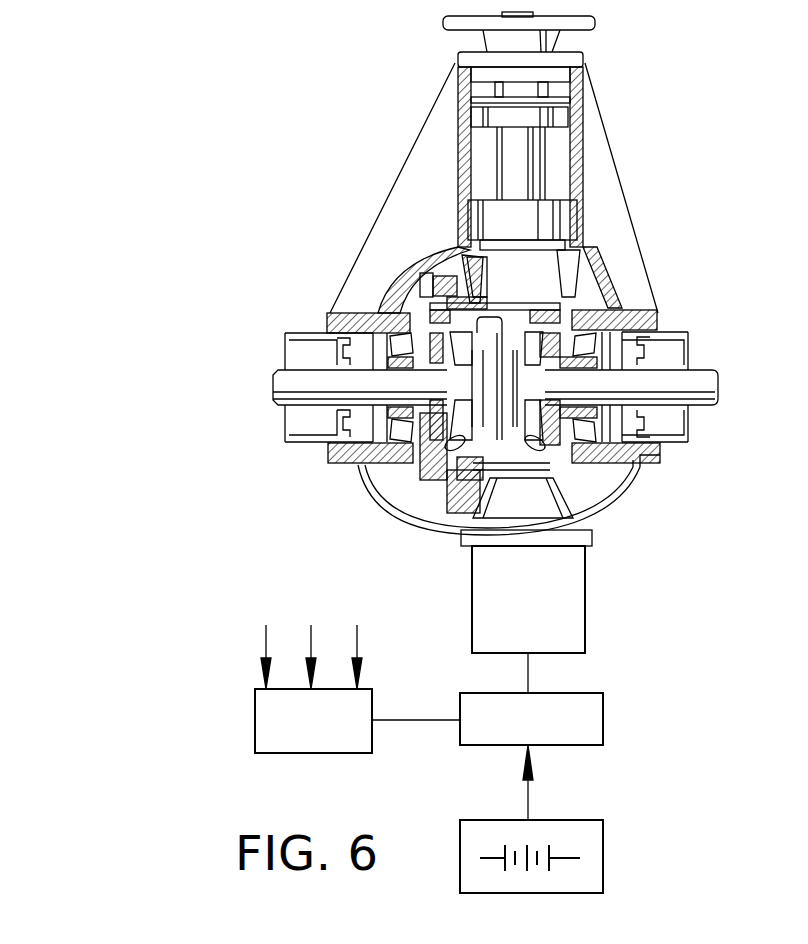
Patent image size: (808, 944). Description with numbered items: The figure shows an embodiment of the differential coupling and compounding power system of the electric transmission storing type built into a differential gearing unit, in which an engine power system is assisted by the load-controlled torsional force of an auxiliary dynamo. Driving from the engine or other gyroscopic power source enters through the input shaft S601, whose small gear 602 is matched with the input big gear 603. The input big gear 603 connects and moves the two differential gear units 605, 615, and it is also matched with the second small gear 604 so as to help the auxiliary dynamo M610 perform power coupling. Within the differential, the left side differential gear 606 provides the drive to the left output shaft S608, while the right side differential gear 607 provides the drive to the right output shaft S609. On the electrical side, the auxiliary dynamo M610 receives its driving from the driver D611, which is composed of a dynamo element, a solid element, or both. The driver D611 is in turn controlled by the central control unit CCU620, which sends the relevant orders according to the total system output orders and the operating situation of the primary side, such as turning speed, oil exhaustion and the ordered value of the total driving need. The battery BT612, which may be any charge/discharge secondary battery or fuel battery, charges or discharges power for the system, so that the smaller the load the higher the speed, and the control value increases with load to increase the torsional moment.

The input shaft S601 is at (520, 150).
The small gear 602 is at (580, 265).
The differential gear unit 605 is at (545, 310).
The left output shaft S608 is at (300, 382).
The right output shaft S609 is at (670, 378).
The left side differential gear 606 is at (425, 423).
The input big gear 603 is at (463, 507).
The second small gear 604 is at (627, 507).
The differential gear unit 615 is at (550, 503).
The right side differential gear 607 is at (535, 462).
The auxiliary dynamo M610 is at (567, 615).
The driver for dynamo driving D611 is at (531, 719).
The central control unit CCU620 is at (313, 689).
The battery BT612 is at (603, 845).